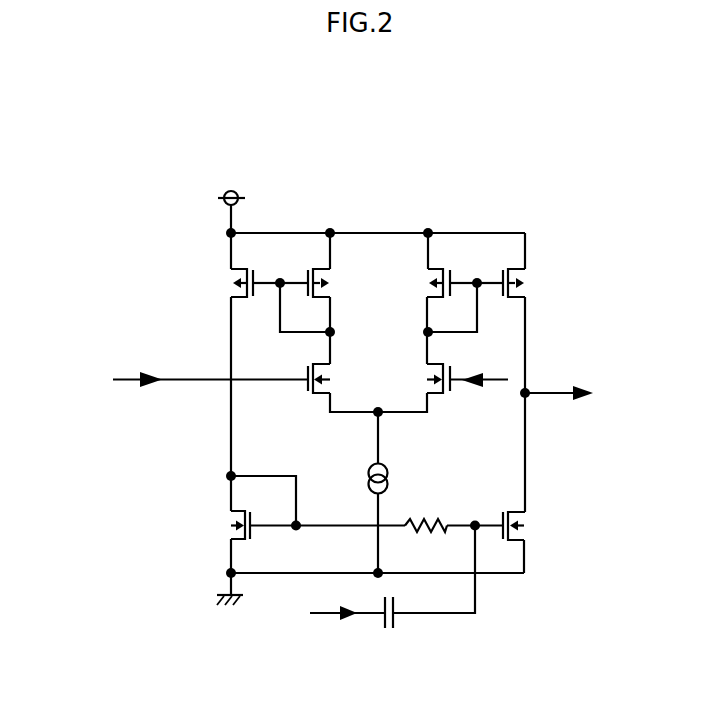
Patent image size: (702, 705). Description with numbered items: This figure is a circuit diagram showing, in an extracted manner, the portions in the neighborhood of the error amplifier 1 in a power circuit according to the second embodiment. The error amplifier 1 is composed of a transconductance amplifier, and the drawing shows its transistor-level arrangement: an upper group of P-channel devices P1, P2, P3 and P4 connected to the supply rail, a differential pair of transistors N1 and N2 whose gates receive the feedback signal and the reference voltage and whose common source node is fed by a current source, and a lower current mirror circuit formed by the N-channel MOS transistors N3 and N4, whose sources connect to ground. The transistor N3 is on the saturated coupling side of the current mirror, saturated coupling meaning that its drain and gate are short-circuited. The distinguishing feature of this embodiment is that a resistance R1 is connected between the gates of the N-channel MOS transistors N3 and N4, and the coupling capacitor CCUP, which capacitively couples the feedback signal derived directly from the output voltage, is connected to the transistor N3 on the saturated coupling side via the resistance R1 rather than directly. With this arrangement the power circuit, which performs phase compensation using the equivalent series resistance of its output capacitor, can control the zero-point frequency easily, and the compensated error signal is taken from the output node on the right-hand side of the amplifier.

The error amplifier 1 is at (395, 197).
The element P1 is at (323, 283).
The element P2 is at (437, 283).
The element P3 is at (238, 283).
The element P4 is at (519, 283).
The element N1 is at (309, 386).
The element N2 is at (445, 386).
The N-channel MOS transistor N3 is at (223, 525).
The N-channel MOS transistor N4 is at (532, 526).
The resistance R1 is at (426, 514).
The coupling capacitor CCUP is at (390, 631).